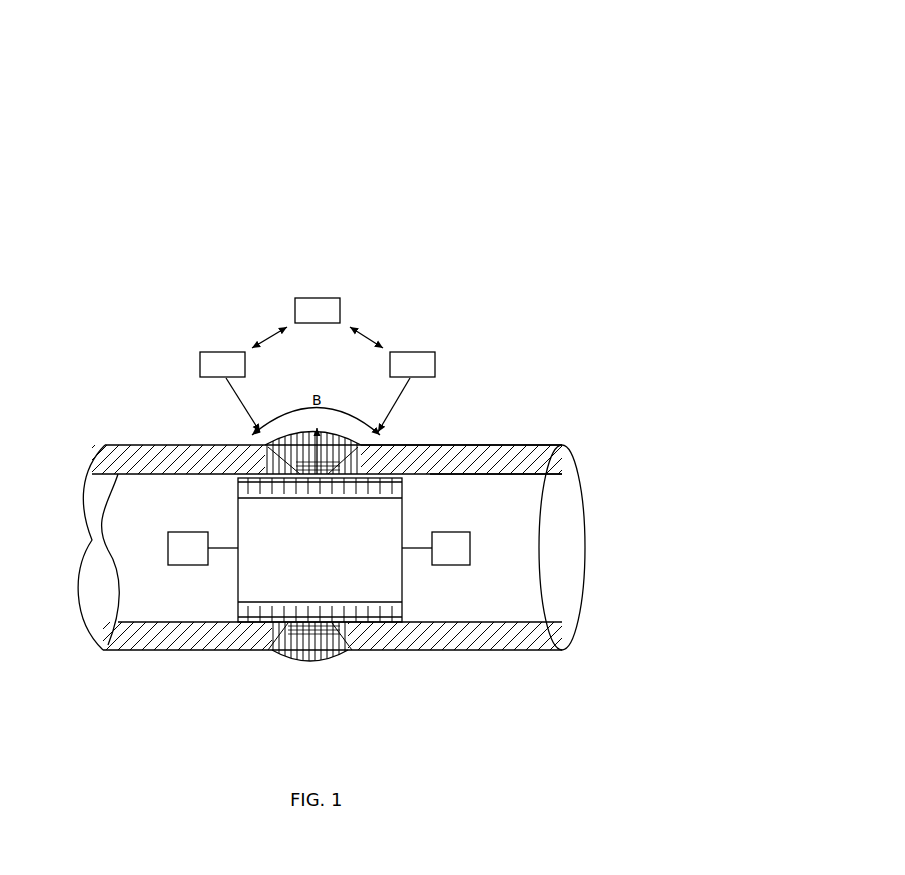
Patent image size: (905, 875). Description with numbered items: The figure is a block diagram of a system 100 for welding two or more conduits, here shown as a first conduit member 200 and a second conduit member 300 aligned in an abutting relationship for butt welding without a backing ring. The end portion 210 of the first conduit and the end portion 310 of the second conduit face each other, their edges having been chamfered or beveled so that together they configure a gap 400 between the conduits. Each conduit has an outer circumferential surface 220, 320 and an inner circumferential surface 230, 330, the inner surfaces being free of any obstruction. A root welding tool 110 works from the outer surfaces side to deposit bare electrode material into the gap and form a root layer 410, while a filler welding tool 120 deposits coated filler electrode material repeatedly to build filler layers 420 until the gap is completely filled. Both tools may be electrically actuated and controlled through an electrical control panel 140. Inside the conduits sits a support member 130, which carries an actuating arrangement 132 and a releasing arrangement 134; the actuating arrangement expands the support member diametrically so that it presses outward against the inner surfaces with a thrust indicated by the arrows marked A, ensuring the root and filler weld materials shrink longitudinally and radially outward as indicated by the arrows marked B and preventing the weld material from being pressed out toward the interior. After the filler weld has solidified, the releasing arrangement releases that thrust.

The system 100 is at (552, 97).
The root welding tool 110 is at (220, 350).
The filler welding tool 120 is at (415, 350).
The support member 130 is at (386, 559).
The actuating arrangement 132 is at (464, 532).
The releasing arrangement 134 is at (176, 532).
The electrical control panel 140 is at (318, 297).
The first conduit member 200 is at (323, 552).
The end portion 210 is at (268, 652).
The outer circumferential surface 220 is at (215, 442).
The inner circumferential surface 230 is at (118, 480).
The second conduit member 300 is at (505, 444).
The end portion 310 is at (368, 657).
The outer circumferential surface 320 is at (440, 445).
The inner circumferential surface 330 is at (508, 478).
The gap 400 is at (316, 663).
The root layer 410 is at (330, 637).
The filler layers 420 is at (308, 646).